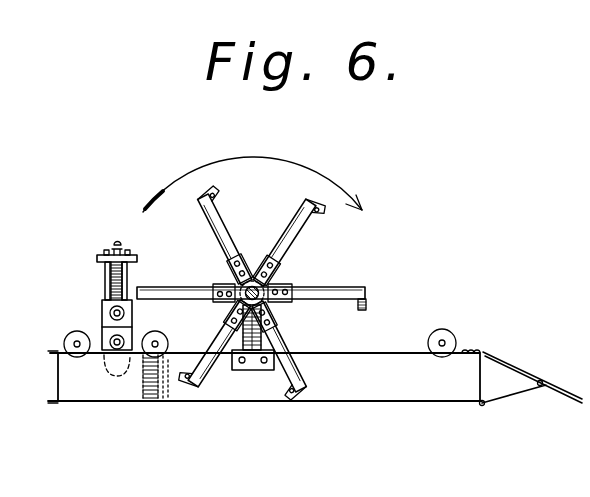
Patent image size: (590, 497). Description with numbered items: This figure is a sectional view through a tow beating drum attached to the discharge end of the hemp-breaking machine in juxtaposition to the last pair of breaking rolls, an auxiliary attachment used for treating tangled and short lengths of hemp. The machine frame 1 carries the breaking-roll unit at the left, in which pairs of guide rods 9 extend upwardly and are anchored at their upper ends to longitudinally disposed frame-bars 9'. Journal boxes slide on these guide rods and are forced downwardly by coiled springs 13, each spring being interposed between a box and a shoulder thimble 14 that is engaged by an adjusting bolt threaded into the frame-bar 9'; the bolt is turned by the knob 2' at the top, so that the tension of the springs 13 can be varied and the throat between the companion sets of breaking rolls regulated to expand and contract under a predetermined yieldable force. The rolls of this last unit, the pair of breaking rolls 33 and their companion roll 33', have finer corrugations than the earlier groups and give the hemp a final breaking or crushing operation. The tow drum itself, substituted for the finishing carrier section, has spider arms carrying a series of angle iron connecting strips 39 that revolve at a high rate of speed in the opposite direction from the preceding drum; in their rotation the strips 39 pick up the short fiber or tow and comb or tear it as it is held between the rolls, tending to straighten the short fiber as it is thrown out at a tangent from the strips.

The bed frame 1 is at (315, 367).
The adjusting knob 2' is at (106, 234).
The guide rods 9 is at (92, 281).
The frame-bars 9' is at (95, 269).
The coiled springs 13 is at (113, 290).
The shoulder thimble 14 is at (139, 257).
The breaking rolls 33 is at (133, 378).
The bearing block 33' is at (94, 325).
The angle iron connecting strips 39 is at (143, 283).